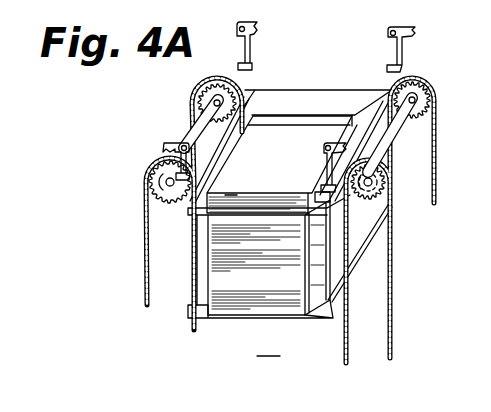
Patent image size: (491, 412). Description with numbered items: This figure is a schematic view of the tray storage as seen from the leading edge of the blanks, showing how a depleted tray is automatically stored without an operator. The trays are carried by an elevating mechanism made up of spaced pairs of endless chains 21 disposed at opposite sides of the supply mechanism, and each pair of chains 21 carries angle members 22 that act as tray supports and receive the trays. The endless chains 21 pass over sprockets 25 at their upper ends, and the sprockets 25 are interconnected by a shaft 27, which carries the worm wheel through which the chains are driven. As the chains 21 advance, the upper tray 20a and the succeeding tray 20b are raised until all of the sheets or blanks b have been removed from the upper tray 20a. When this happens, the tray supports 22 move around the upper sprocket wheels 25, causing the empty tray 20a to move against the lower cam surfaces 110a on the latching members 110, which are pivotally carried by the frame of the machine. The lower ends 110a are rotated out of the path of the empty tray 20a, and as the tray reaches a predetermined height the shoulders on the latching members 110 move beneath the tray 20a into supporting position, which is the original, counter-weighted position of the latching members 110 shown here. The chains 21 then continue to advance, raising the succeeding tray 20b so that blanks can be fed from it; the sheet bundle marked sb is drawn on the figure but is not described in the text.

The latching member 110 is at (252, 50).
The lower cam surface 110a is at (322, 185).
The angle member 22 is at (245, 112).
The endless chain 21 is at (145, 288).
The sprocket 25 is at (203, 98).
The shaft 27 is at (193, 137).
The upper tray 20a is at (262, 214).
The succeeding tray 20b is at (242, 318).
The sheets or blanks b is at (231, 185).
The sheet bundle sb is at (267, 300).